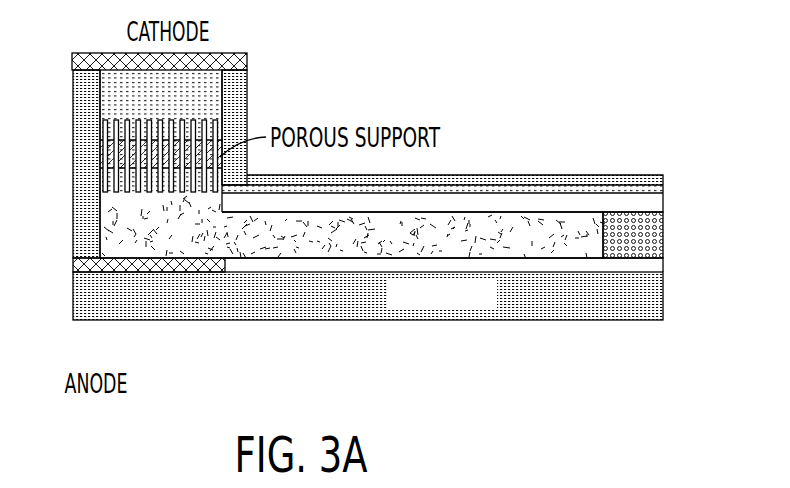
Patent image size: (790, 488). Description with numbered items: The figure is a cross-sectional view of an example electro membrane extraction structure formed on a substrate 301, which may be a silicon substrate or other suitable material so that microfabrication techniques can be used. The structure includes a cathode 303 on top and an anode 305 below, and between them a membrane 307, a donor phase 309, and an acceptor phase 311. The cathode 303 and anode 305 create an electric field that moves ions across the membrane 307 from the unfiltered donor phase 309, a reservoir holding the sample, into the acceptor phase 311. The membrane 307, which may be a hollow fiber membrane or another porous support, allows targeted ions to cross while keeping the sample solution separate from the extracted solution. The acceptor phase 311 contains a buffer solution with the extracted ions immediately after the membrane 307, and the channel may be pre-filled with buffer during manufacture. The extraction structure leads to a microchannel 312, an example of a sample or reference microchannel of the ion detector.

The substrate 301 is at (200, 310).
The cathode 303 is at (100, 54).
The anode 305 is at (123, 268).
The membrane 307 is at (118, 152).
The donor phase 309 is at (213, 80).
The acceptor phase 311 is at (320, 255).
The microchannel 312 is at (655, 232).